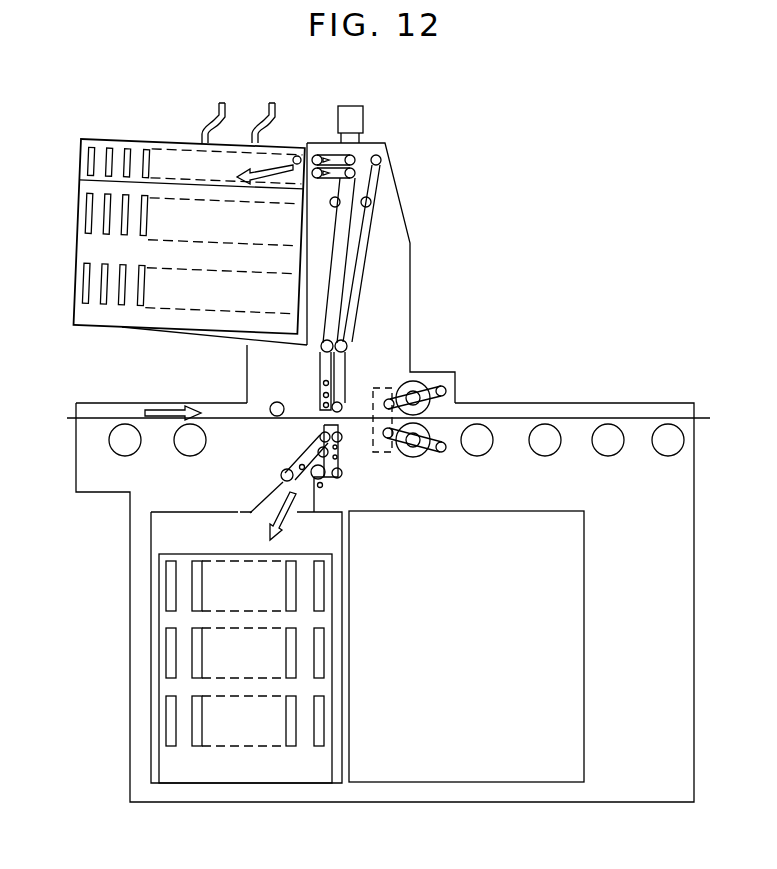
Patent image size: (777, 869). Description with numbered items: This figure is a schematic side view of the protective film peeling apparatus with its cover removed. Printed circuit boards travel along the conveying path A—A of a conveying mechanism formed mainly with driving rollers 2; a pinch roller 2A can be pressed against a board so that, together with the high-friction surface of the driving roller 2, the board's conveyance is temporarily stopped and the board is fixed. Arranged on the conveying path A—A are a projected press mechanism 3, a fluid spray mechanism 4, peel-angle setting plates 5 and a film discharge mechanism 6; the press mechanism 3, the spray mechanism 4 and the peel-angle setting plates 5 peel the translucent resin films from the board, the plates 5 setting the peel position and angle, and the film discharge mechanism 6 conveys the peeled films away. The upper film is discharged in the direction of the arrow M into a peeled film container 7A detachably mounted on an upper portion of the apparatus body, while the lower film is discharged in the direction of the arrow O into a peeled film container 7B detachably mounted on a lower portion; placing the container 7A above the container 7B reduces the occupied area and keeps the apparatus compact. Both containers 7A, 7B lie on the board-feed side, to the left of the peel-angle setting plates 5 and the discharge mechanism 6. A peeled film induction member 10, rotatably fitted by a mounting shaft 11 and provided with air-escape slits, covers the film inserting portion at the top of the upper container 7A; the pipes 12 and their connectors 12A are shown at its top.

The conveyance driving roller 2 is at (190, 452).
The pinch roller 2A is at (281, 405).
The projected press mechanism 3 is at (386, 388).
The fluid spray mechanism 4 is at (415, 386).
The peel-angle setting plate 5 is at (320, 380).
The film discharge mechanism 6 is at (343, 366).
The peeled film container 7A is at (85, 248).
The peeled film container 7B is at (165, 760).
The peeled film induction member 10 is at (157, 147).
The mounting shaft 11 is at (306, 150).
The suction pipes 12 is at (200, 138).
The pipe connectors 12A is at (222, 103).
The arrow M is at (270, 166).
The conveying path A— A is at (160, 405).
The arrow O is at (286, 516).